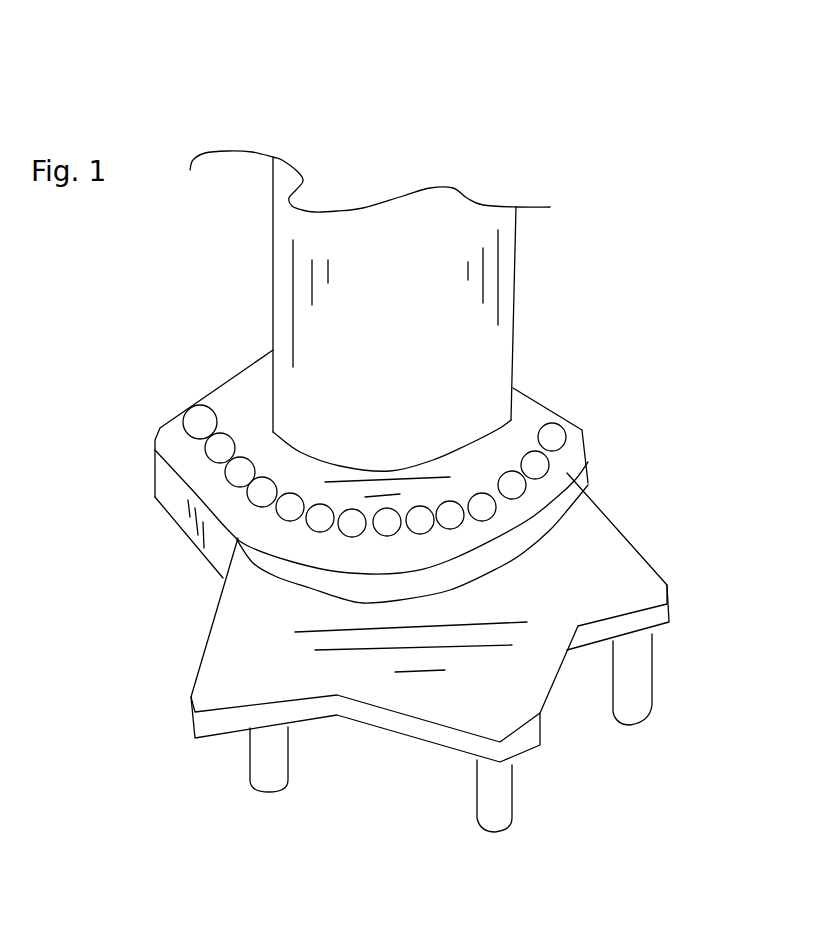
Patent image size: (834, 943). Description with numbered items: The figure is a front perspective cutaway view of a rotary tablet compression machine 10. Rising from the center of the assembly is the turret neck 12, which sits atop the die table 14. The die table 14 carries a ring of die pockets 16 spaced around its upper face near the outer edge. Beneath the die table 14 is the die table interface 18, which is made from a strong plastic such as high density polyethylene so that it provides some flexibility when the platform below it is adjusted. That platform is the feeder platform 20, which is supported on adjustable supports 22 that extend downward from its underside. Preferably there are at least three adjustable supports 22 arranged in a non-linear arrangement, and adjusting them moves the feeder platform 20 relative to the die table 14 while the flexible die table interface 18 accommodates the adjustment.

The rotary tablet compression machine 10 is at (703, 123).
The turret neck 12 is at (492, 362).
The die table 14 is at (530, 422).
The die pockets 16 is at (532, 468).
The die table interface 18 is at (557, 507).
The feeder platform 20 is at (613, 563).
The adjustable supports 22 is at (502, 813).